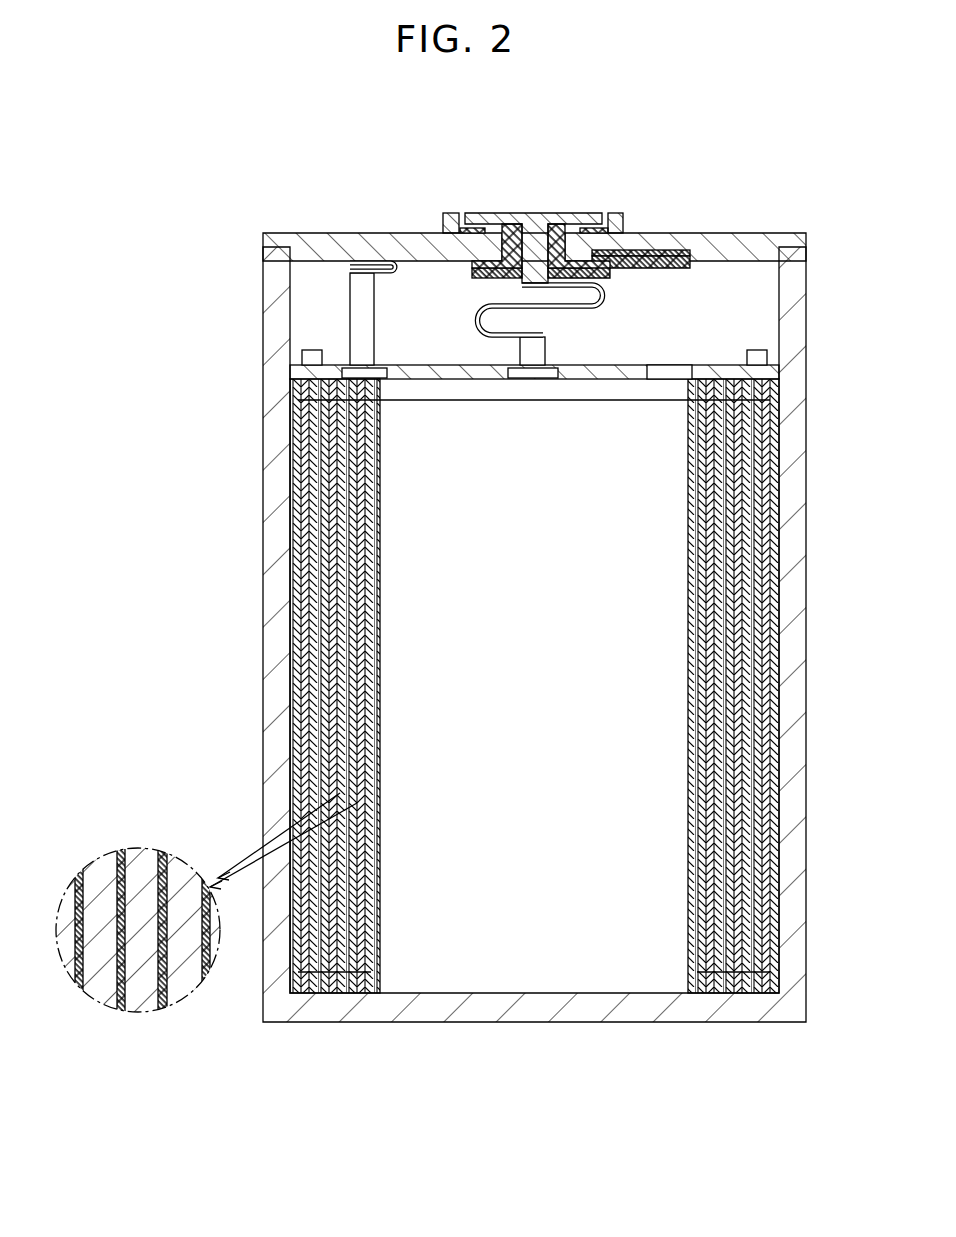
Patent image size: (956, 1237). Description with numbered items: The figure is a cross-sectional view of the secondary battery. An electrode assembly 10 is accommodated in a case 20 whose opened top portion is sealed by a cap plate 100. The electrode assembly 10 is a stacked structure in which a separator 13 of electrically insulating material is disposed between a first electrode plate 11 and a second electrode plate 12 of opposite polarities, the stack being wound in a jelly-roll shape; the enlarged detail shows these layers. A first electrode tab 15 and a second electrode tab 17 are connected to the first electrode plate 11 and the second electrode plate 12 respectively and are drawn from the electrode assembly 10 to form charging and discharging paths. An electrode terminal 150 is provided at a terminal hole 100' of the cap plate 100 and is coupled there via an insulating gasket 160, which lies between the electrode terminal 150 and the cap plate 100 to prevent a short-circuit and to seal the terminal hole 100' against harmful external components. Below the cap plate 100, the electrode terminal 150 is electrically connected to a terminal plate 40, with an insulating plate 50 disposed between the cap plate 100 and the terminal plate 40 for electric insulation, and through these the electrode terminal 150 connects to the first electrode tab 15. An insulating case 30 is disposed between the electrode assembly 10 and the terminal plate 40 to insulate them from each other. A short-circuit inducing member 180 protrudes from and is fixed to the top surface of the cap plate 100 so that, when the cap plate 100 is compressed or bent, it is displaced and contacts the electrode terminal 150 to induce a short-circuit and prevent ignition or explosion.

The electrode assembly 10 is at (549, 704).
The first electrode plate 11 is at (142, 995).
The second electrode plate 12 is at (185, 973).
The separator 13 is at (163, 850).
The first electrode tab 15 is at (482, 325).
The second electrode tab 17 is at (357, 310).
The case 20 is at (272, 593).
The insulating case 30 is at (298, 368).
The terminal plate 40 is at (645, 268).
The insulating plate 50 is at (663, 250).
The cap plate 100 is at (534, 204).
The terminal hole 100' is at (480, 196).
The electrode terminal 150 is at (532, 213).
The insulating gasket 160 is at (560, 223).
The short-circuit inducing member 180 is at (620, 213).